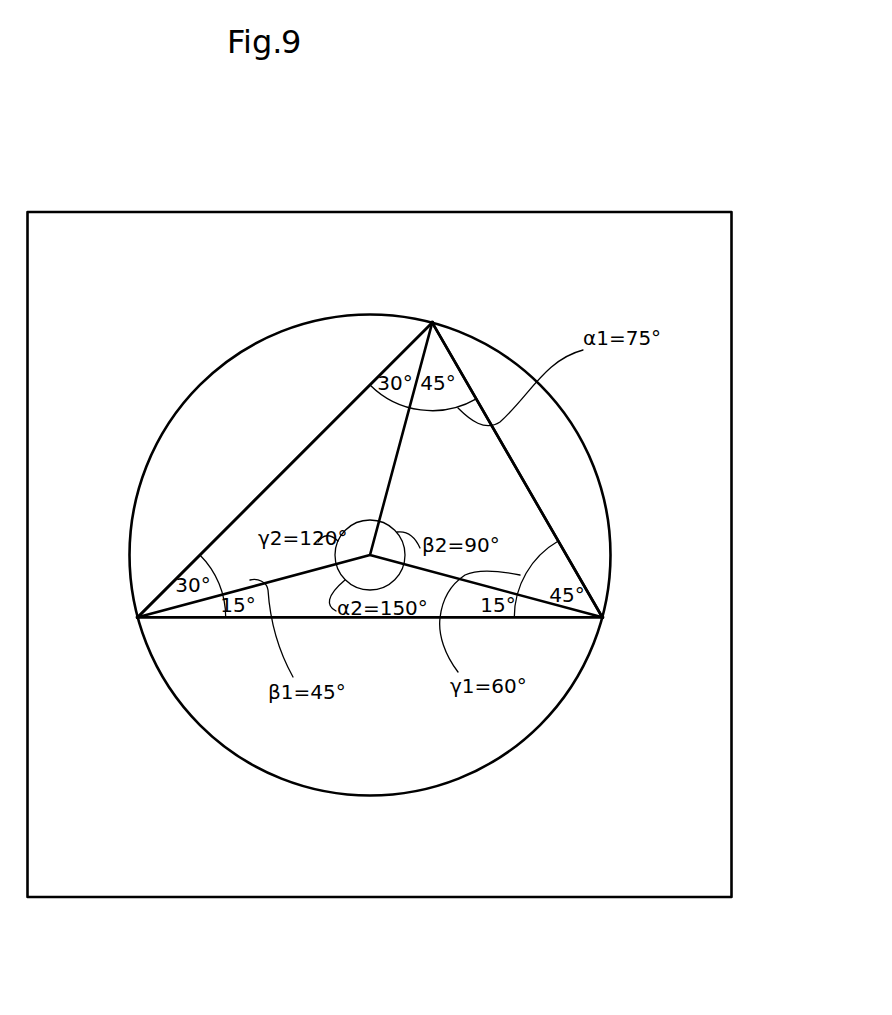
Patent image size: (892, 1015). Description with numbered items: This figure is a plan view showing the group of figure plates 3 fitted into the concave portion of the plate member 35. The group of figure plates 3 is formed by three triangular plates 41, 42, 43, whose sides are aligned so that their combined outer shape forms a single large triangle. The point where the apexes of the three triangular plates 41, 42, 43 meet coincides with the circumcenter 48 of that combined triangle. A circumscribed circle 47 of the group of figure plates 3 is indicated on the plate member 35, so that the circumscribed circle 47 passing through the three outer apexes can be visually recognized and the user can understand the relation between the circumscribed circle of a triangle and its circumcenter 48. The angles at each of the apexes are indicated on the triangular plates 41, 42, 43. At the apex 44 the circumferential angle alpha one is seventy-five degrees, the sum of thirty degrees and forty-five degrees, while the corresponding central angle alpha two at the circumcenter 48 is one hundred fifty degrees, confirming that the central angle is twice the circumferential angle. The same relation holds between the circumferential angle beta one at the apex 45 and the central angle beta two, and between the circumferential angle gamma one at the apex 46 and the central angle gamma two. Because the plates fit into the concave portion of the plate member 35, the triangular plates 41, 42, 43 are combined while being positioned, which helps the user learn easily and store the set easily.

The group of figure plates 3 is at (540, 460).
The plate member 35 is at (732, 577).
The triangular plate 41 is at (285, 448).
The triangular plate 42 is at (560, 522).
The triangular plate 43 is at (385, 648).
The apex 44 is at (432, 323).
The apex 45 is at (138, 617).
The apex 46 is at (602, 617).
The circumscribed circle 47 is at (610, 553).
The circumcenter 48 is at (370, 520).